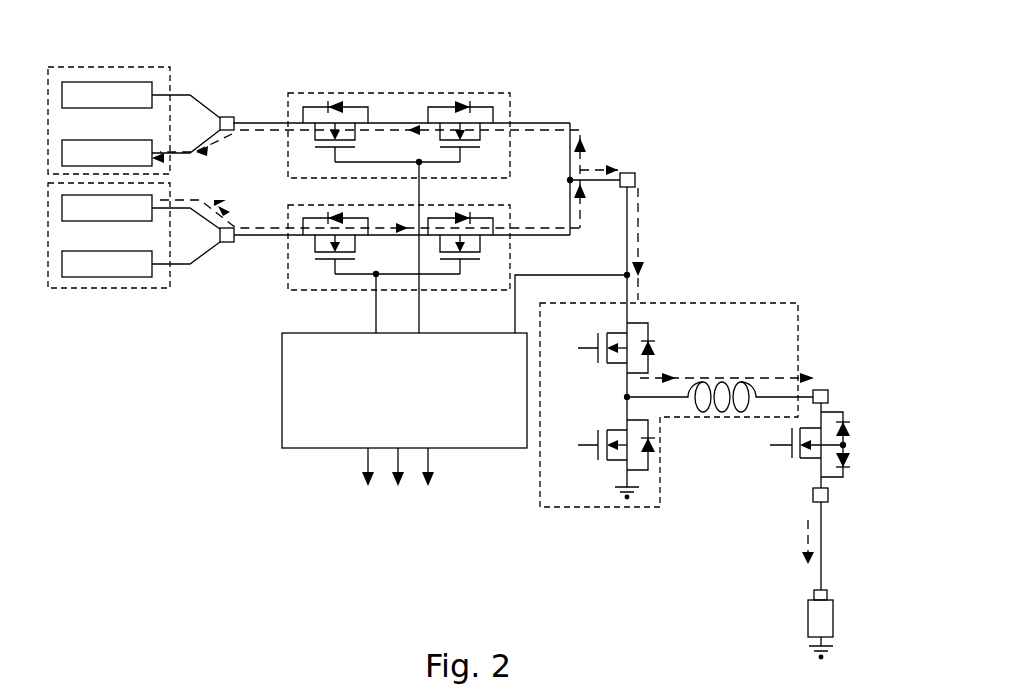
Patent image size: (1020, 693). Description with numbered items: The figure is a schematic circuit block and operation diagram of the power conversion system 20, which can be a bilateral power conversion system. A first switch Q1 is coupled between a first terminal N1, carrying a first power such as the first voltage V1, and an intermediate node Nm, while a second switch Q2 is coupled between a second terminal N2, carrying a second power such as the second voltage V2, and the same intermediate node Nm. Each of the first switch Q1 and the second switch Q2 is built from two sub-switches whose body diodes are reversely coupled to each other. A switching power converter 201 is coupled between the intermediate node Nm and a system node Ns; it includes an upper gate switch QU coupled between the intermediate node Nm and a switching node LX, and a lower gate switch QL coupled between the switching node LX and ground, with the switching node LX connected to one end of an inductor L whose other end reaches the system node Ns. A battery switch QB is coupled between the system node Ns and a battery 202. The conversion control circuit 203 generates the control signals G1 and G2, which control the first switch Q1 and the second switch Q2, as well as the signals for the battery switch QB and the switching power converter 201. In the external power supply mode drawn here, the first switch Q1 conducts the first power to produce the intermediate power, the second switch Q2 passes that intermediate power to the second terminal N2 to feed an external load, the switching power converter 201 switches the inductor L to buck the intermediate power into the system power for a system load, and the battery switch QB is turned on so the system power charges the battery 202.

The power conversion system 20 is at (238, 46).
The switching power converter 201 is at (707, 301).
The battery 202 is at (833, 623).
The conversion control circuit 203 is at (404, 426).
The first voltage V1 is at (113, 289).
The second voltage V2 is at (118, 67).
The first terminal N1 is at (361, 237).
The second terminal N2 is at (361, 124).
The intermediate node Nm is at (636, 176).
The system node Ns is at (830, 390).
The first switch Q1 is at (399, 247).
The second switch Q2 is at (399, 135).
The control signal G1 is at (357, 303).
The control signal G2 is at (433, 247).
The upper gate switch QU is at (601, 353).
The lower gate switch QL is at (601, 448).
The battery switch QB is at (795, 452).
The switching node LX is at (610, 397).
The inductor L is at (720, 386).